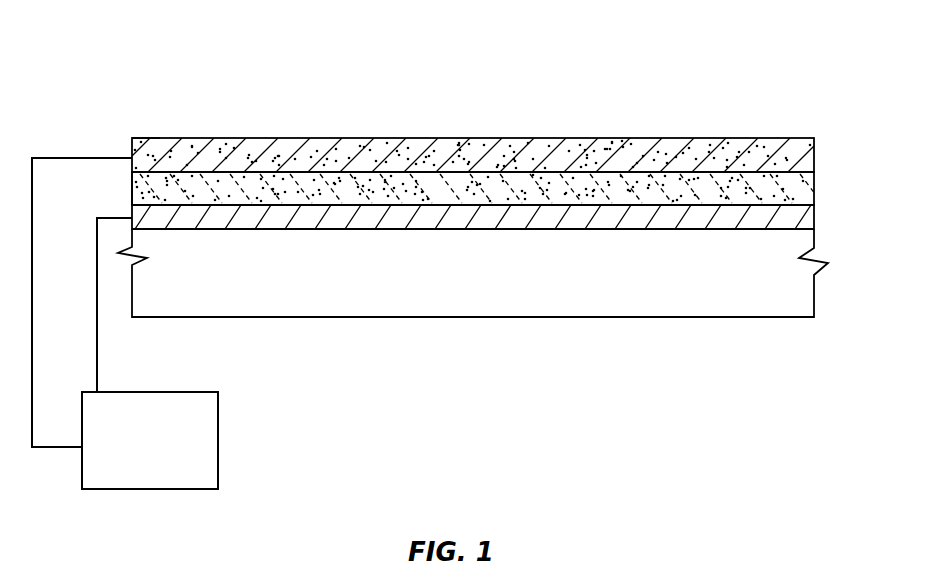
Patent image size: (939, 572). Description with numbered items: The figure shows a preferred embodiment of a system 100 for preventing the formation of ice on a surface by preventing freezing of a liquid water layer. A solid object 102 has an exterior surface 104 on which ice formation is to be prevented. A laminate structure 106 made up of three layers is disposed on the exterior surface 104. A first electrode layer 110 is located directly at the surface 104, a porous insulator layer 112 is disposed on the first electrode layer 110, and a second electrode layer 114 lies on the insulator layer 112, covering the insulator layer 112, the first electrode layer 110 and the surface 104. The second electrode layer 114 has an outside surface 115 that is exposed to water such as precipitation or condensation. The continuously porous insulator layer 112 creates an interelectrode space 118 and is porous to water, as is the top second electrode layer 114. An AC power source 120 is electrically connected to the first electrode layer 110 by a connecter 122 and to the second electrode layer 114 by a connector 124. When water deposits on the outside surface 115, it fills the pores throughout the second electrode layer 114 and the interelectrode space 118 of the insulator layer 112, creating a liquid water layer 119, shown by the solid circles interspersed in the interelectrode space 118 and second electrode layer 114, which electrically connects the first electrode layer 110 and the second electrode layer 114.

The system 100 is at (468, 253).
The solid object 102 is at (573, 285).
The exterior surface 104 is at (814, 226).
The laminate structure 106 is at (510, 144).
The first electrode layer 110 is at (812, 213).
The porous insulator layer 112 is at (803, 177).
The second electrode layer 114 is at (806, 147).
The outside surface 115 is at (510, 161).
The interelectrode space 118 is at (131, 191).
The liquid water layer 119 is at (131, 146).
The AC power source 120 is at (219, 419).
The connecter 122 is at (98, 345).
The connector 124 is at (34, 331).